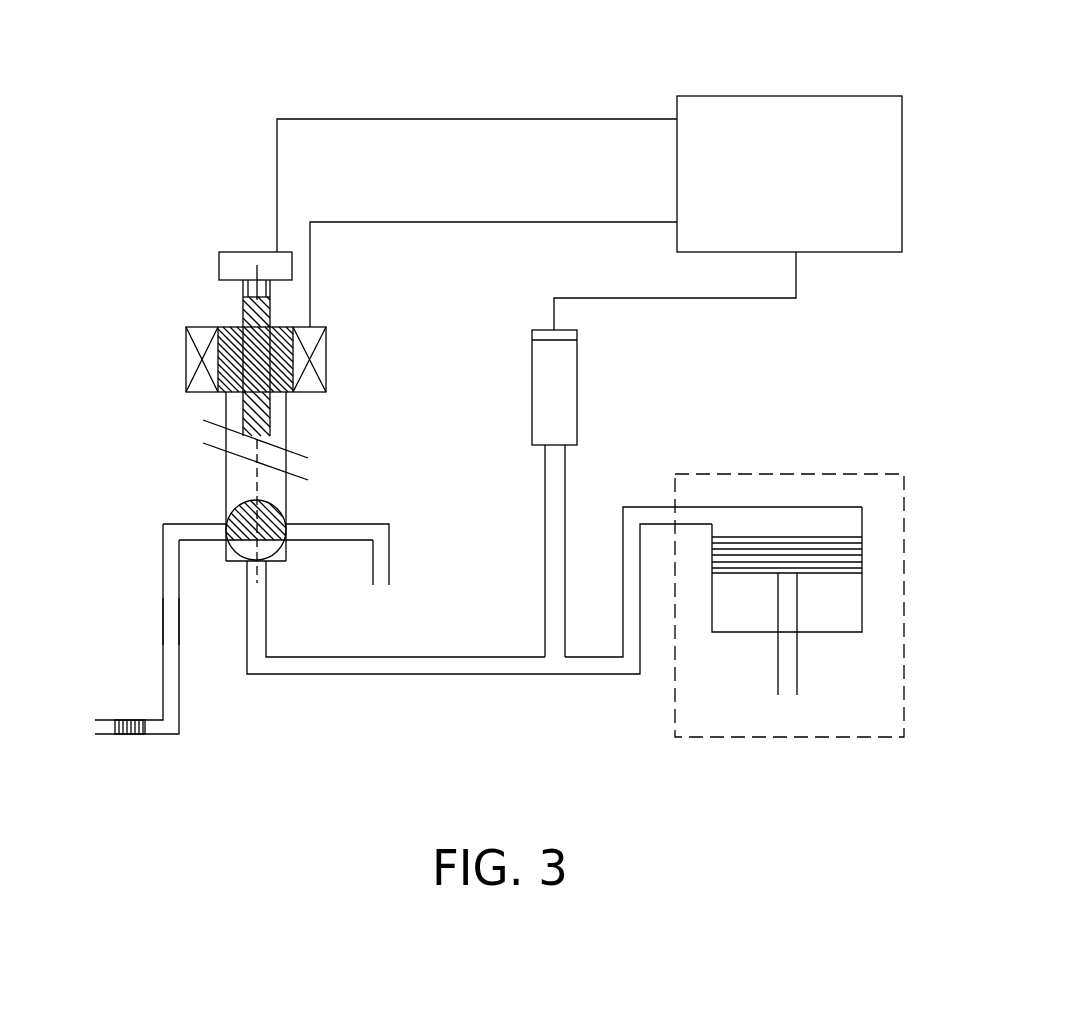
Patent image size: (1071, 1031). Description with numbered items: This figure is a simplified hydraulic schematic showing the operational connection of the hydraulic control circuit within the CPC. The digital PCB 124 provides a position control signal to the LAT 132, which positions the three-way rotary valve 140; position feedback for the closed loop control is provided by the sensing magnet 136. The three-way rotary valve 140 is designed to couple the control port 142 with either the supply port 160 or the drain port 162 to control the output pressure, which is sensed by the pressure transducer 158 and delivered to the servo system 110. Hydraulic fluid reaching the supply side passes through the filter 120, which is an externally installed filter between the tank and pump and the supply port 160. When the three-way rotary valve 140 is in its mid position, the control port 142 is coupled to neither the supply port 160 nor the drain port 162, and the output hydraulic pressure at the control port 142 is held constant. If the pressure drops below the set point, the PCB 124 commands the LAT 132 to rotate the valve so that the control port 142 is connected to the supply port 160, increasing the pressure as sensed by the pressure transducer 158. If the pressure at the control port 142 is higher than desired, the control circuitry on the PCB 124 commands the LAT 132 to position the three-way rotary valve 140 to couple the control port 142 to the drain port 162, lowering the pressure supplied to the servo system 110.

The servo system 110 is at (800, 474).
The filter 120 is at (130, 720).
The digital PCB 124 is at (728, 96).
The LAT 132 is at (353, 346).
The sensing magnet 136 is at (235, 252).
The three-way rotary valve 140 is at (248, 517).
The control port 142 is at (658, 513).
The pressure transducer 158 is at (532, 387).
The supply port 160 is at (168, 565).
The drain port 162 is at (390, 553).